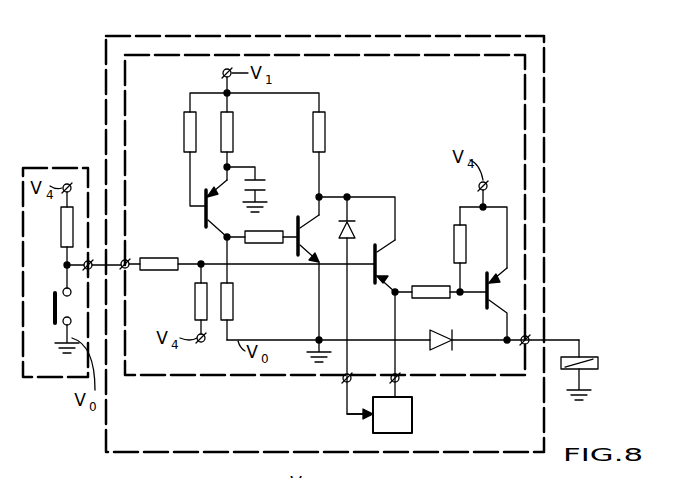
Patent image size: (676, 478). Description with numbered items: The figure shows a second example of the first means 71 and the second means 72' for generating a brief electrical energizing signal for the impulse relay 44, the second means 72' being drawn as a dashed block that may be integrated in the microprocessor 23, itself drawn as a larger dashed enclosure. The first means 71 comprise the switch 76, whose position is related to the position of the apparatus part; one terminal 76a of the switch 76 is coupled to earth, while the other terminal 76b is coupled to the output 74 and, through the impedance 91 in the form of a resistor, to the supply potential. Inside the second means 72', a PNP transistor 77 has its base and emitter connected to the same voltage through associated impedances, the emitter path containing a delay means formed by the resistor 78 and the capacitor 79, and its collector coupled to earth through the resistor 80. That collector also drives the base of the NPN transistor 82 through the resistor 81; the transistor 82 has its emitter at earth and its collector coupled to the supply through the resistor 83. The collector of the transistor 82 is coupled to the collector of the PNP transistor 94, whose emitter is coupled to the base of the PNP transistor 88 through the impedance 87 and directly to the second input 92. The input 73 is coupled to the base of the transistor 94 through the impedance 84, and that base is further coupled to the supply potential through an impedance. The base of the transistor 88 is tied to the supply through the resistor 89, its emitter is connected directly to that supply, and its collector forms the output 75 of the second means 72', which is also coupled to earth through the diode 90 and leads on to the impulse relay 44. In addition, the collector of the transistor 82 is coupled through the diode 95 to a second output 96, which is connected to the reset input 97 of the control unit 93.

The microprocessor 23 is at (546, 121).
The second means 72' is at (353, 215).
The first means 71 is at (57, 166).
The impedance 91 is at (60, 225).
The switch 76 is at (50, 303).
The terminal 76a is at (63, 323).
The terminal 76b is at (63, 288).
The output 74 is at (88, 258).
The input 73 is at (128, 270).
The output 75 is at (521, 344).
The impedance 84 is at (160, 255).
The resistor 78 is at (233, 127).
The capacitor 79 is at (259, 178).
The resistor 83 is at (325, 127).
The PNP transistor 77 is at (205, 213).
The resistor 81 is at (270, 246).
The resistor 80 is at (233, 304).
The NPN transistor 82 is at (298, 220).
The diode 95 is at (352, 229).
The PNP transistor 94 is at (386, 256).
The impedance 87 is at (440, 272).
The resistor 89 is at (452, 236).
The PNP transistor 88 is at (482, 272).
The diode 90 is at (432, 328).
The impulse relay 44 is at (585, 356).
The second output 96 is at (343, 382).
The second input 92 is at (403, 383).
The control unit 93 is at (413, 418).
The reset input 97 is at (371, 415).